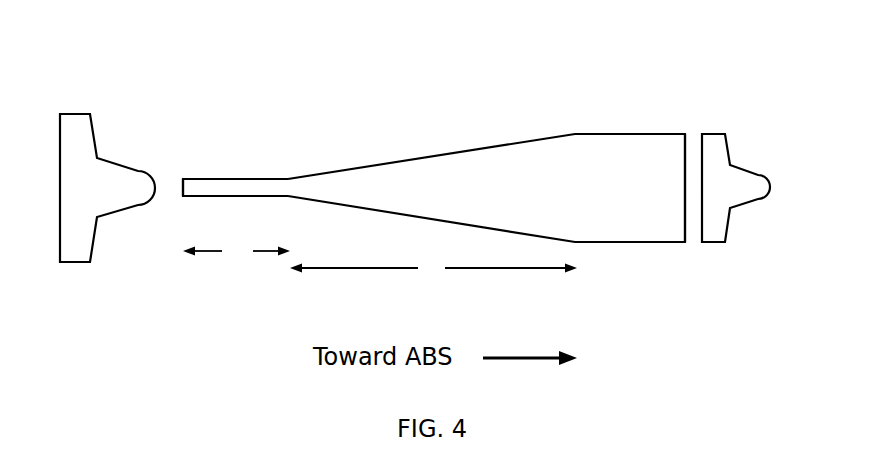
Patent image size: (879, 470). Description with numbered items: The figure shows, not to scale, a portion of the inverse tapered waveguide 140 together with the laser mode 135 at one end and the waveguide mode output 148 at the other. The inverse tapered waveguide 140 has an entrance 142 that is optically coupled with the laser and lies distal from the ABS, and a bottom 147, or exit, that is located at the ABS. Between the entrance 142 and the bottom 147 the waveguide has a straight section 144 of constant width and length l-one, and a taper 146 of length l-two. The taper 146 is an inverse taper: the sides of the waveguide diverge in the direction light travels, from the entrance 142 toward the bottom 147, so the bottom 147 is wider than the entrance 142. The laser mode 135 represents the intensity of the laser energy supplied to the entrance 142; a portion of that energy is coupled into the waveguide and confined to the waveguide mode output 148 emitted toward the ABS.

The laser mode 135 is at (78, 271).
The inverse tapered waveguide 140 is at (458, 48).
The entrance 142 is at (183, 168).
The straight section 144 is at (239, 147).
The taper 146 is at (418, 141).
The bottom 147 is at (684, 251).
The waveguide mode output 148 is at (738, 131).